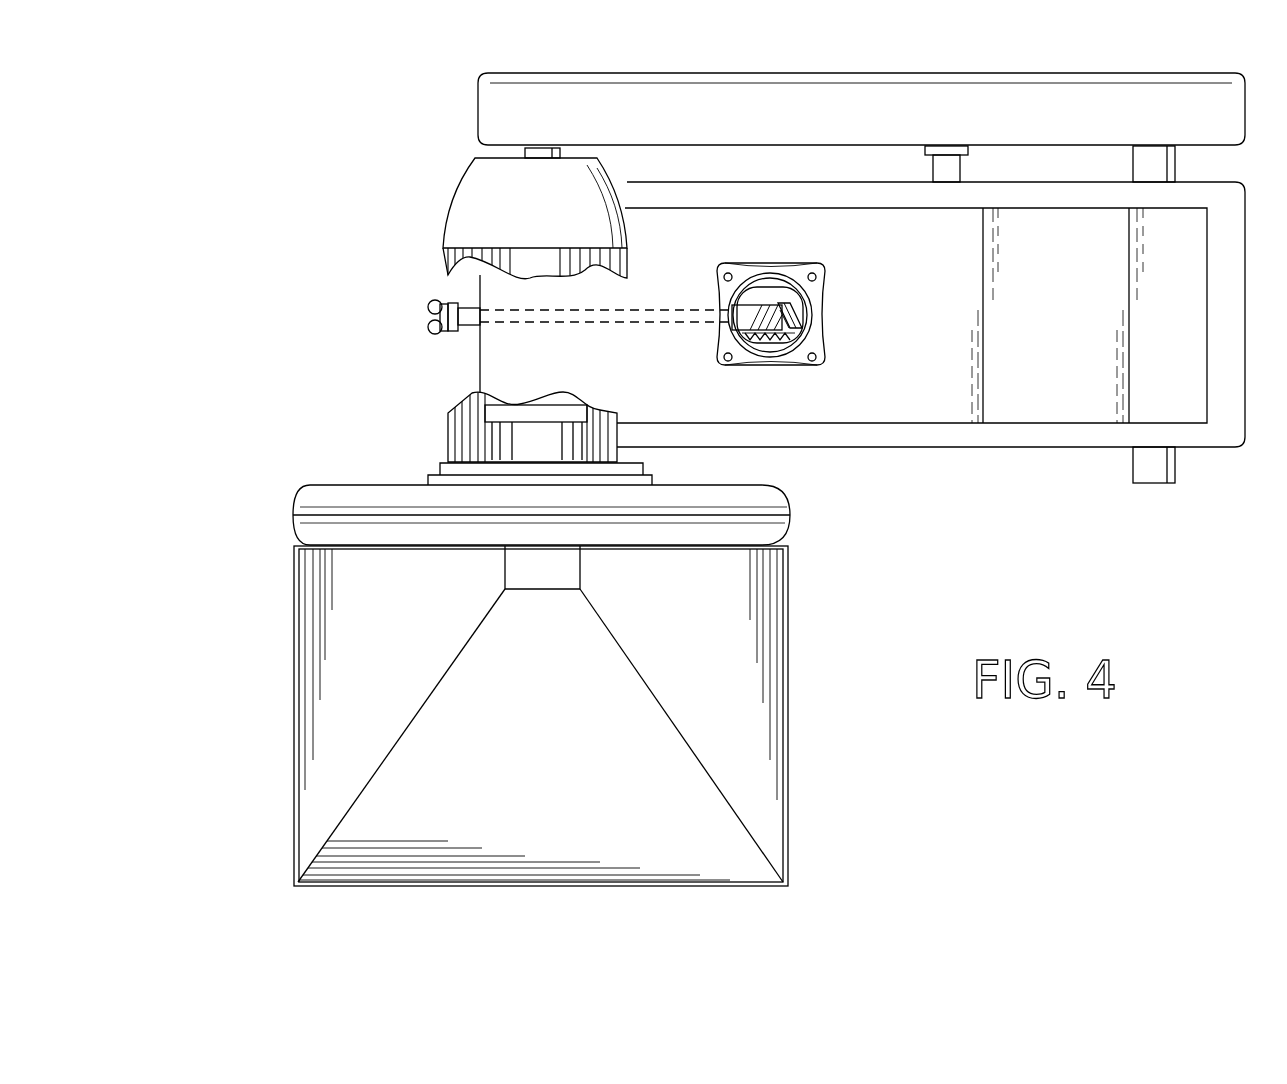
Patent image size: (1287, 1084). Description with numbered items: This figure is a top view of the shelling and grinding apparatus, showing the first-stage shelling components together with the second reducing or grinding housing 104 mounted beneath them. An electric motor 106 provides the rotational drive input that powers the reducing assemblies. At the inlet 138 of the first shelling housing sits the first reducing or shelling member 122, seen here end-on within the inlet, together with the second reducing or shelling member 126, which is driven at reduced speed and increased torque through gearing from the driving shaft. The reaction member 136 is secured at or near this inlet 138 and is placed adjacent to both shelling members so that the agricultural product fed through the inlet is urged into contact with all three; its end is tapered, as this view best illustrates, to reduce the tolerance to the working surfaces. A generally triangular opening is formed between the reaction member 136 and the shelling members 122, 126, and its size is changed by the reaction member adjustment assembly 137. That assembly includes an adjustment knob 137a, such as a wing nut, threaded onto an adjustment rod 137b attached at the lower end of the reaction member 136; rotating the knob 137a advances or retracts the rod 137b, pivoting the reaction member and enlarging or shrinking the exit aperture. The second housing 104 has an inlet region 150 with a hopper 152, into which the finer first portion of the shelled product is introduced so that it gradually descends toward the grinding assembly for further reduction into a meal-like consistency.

The second reducing or grinding housing 104 is at (520, 717).
The electric motor 106 is at (470, 203).
The first reducing or shelling member 122 is at (804, 317).
The second reducing or shelling member 126 is at (762, 342).
The reaction member 136 is at (762, 305).
The reaction member adjustment assembly 137 is at (510, 345).
The adjustment knob 137a is at (433, 302).
The adjustment rod 137b is at (573, 323).
The inlet 138 is at (818, 332).
The inlet region 150 is at (645, 818).
The hopper 152 is at (767, 781).